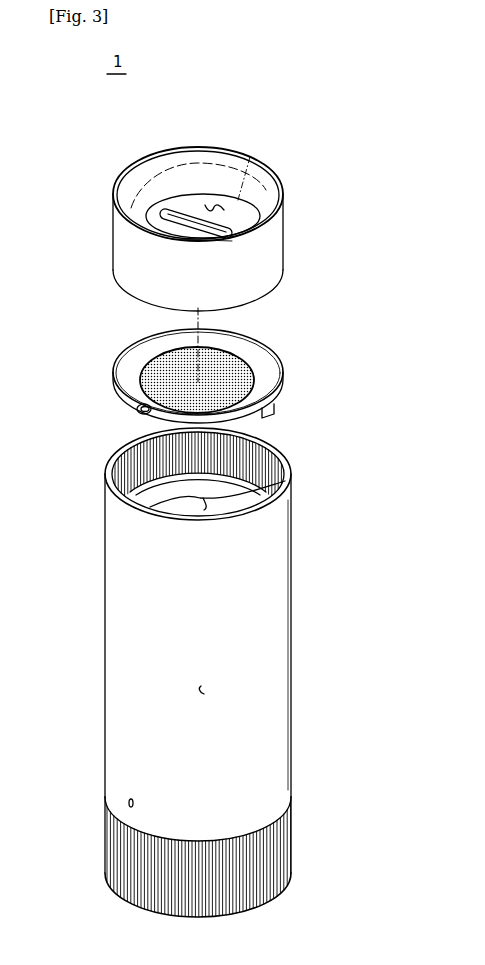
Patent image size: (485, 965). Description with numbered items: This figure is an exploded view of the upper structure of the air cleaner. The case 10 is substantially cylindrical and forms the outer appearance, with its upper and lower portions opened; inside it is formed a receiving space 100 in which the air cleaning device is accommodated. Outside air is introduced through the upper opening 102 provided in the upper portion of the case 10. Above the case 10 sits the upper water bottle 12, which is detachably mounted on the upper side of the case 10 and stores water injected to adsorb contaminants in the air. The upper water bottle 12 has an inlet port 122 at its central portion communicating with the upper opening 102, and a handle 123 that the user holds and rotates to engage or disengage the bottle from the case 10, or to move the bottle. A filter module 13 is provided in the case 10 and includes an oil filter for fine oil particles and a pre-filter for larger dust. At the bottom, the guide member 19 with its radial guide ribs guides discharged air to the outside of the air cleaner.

The case 10 is at (278, 568).
The upper water bottle 12 is at (276, 240).
The filter module 13 is at (295, 372).
The guide member 19 is at (270, 870).
The receiving space 100 is at (205, 693).
The upper opening 102 is at (285, 481).
The inlet port 122 is at (222, 210).
The handle 123 is at (184, 210).